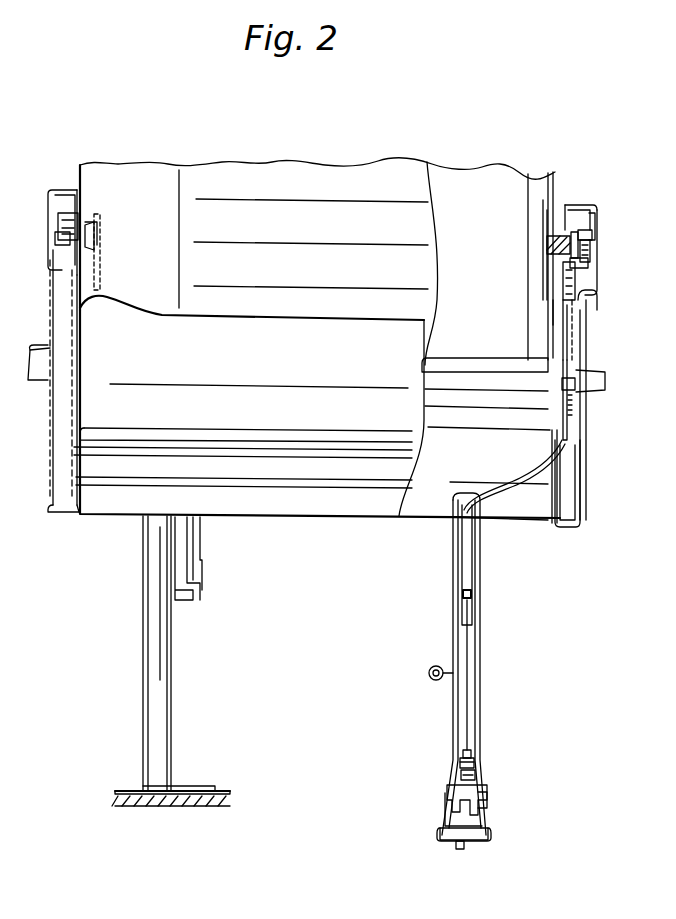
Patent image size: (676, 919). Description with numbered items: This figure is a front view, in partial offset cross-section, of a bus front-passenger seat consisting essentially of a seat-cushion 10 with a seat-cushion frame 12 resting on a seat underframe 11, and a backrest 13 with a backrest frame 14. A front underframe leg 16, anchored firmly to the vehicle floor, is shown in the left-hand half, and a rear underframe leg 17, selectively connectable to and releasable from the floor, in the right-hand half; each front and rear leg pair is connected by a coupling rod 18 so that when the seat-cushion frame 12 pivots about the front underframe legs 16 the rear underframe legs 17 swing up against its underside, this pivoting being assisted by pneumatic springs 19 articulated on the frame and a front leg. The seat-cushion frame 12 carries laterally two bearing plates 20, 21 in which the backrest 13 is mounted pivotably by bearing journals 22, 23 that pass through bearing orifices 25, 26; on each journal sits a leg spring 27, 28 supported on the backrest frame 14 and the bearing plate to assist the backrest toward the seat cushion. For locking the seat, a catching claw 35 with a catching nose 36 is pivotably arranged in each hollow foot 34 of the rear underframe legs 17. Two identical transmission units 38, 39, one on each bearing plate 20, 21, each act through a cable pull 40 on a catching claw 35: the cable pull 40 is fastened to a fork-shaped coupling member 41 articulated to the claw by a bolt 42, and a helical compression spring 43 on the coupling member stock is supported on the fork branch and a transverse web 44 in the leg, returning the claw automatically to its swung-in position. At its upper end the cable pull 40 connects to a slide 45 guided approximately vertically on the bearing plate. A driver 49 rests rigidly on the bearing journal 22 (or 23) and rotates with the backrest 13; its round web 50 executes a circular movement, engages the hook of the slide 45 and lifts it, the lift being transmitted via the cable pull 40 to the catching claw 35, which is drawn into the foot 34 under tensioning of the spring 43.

The seat-cushion 10 is at (257, 340).
The seat underframe 11 is at (143, 644).
The seat-cushion frame 12 is at (302, 503).
The backrest 13 is at (353, 186).
The backrest frame 14 is at (533, 204).
The front underframe leg 16 is at (147, 728).
The rear underframe leg 17 is at (477, 616).
The coupling rod 18 is at (429, 676).
The pneumatic spring 19 is at (197, 558).
The bearing plate 20 is at (552, 520).
The bearing plate 21 is at (62, 492).
The bearing journal 22 is at (557, 200).
The bearing journal 23 is at (96, 213).
The bearing orifice 25 is at (581, 228).
The bearing orifice 26 is at (101, 252).
The leg spring 27 is at (597, 228).
The leg spring 28 is at (51, 190).
The hollow foot 34 is at (443, 794).
The catching claw 35 is at (488, 836).
The catching nose 36 is at (459, 849).
The transmission unit 38 is at (585, 328).
The transmission unit 39 is at (66, 277).
The cable pull 40 is at (455, 570).
The fork-shaped coupling member 41 is at (477, 779).
The bolt 42 is at (480, 808).
The helical compression spring 43 is at (476, 770).
The transverse web 44 is at (478, 754).
The slide 45 is at (564, 285).
The driver 49 is at (68, 195).
The round web 50 is at (57, 236).